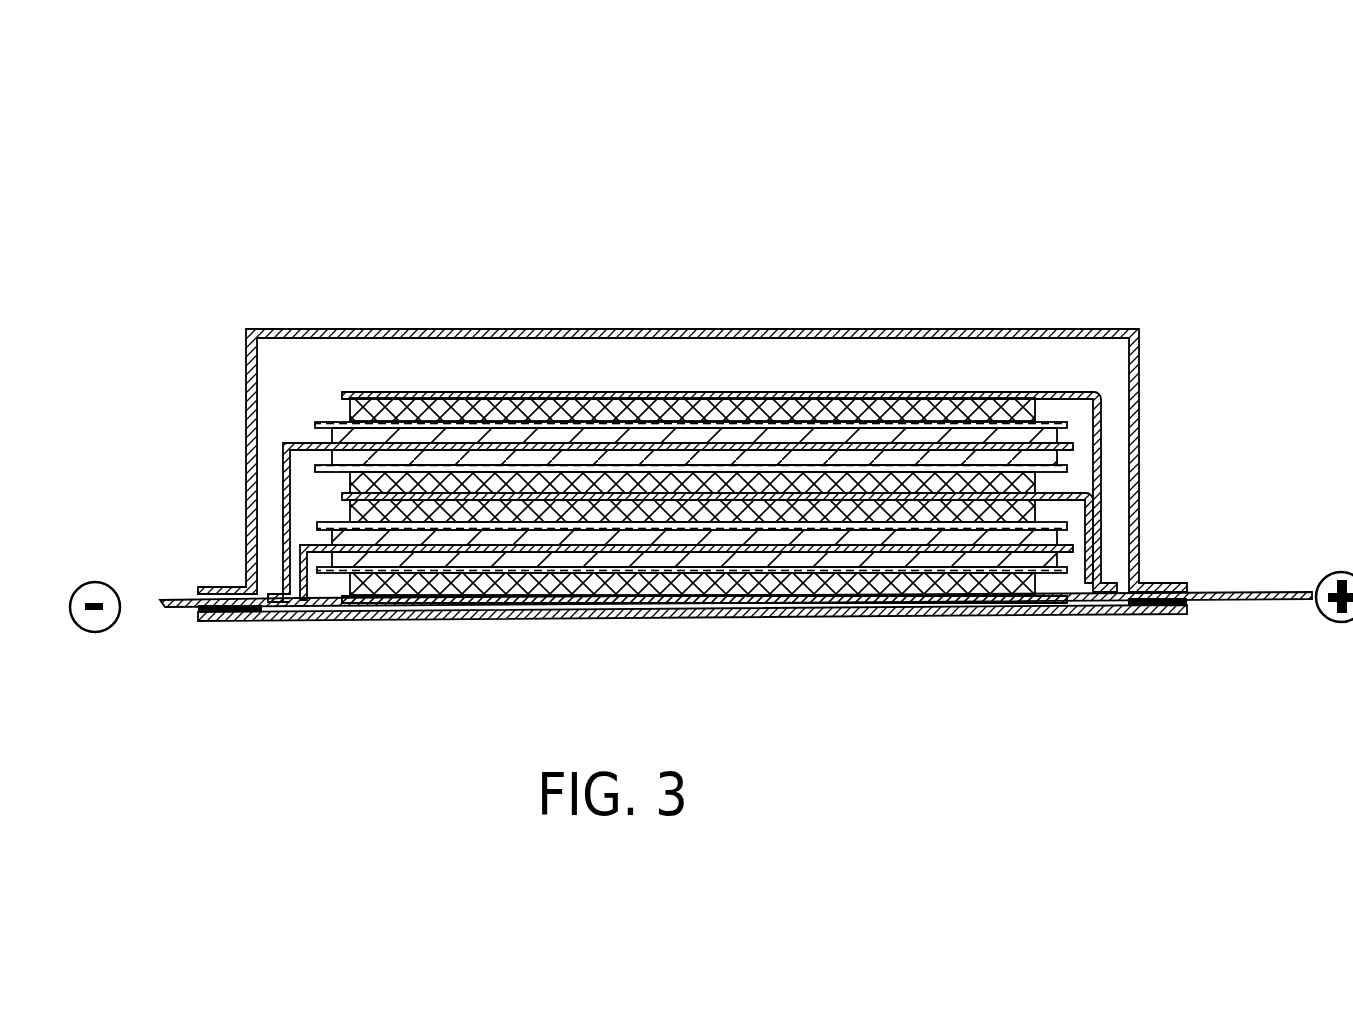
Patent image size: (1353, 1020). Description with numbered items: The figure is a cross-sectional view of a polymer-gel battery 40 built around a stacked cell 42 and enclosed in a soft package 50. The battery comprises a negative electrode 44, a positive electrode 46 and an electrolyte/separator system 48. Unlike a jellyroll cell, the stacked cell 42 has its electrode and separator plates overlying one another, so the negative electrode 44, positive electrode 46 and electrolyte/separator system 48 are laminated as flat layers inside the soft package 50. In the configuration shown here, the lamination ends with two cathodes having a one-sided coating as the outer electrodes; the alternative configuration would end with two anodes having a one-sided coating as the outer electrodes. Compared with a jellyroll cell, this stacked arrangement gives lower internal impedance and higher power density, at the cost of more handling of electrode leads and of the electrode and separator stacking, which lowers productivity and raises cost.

The polymer-gel battery 40 is at (150, 378).
The stacked cell 42 is at (366, 368).
The negative electrode 44 is at (602, 437).
The positive electrode 46 is at (852, 412).
The electrolyte/separator system 48 is at (1063, 424).
The soft package 50 is at (1134, 365).